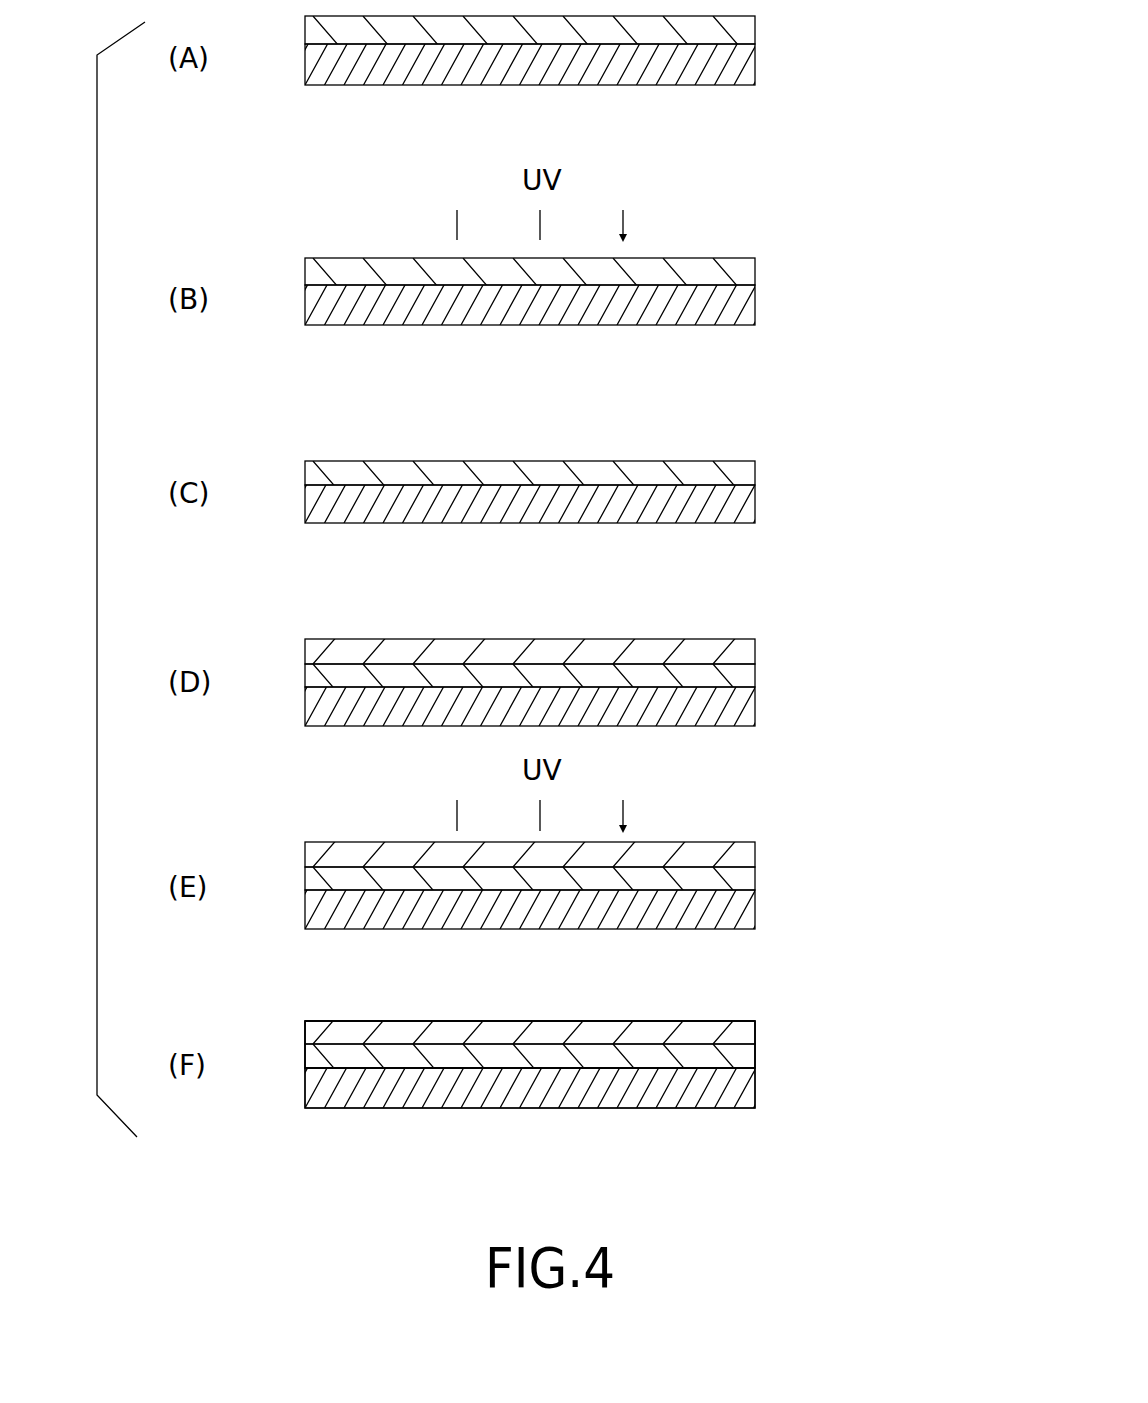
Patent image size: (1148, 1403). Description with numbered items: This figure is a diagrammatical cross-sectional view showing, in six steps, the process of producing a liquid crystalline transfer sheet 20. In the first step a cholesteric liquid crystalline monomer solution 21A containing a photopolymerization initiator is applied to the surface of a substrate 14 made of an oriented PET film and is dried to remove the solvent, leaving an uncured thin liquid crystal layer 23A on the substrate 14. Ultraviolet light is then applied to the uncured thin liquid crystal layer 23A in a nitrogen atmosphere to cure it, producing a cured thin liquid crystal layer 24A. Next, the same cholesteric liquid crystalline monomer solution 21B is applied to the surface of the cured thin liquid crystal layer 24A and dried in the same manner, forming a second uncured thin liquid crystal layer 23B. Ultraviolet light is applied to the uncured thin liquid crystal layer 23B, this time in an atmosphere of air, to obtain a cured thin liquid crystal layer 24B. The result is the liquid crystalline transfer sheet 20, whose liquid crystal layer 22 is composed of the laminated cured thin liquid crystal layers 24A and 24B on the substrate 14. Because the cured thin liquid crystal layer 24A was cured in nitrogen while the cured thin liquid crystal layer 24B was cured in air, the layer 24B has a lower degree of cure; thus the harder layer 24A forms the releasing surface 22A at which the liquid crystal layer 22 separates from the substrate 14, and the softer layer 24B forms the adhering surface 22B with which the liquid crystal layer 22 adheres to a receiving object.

The substrate 14 is at (752, 62).
The cholesteric liquid crystalline monomer solution 21A is at (737, 28).
The uncured thin liquid crystal layer 23A is at (737, 270).
The cured thin liquid crystal layer 24A is at (737, 472).
The cholesteric liquid crystalline monomer solution 21B is at (737, 648).
The uncured thin liquid crystal layer 23B is at (737, 852).
The cured thin liquid crystal layer 24B is at (737, 1033).
The liquid crystal layer 22 is at (858, 1012).
The releasing surface 22A is at (648, 1060).
The adhering surface 22B is at (623, 1030).
The liquid crystalline transfer sheet 20 is at (296, 1017).